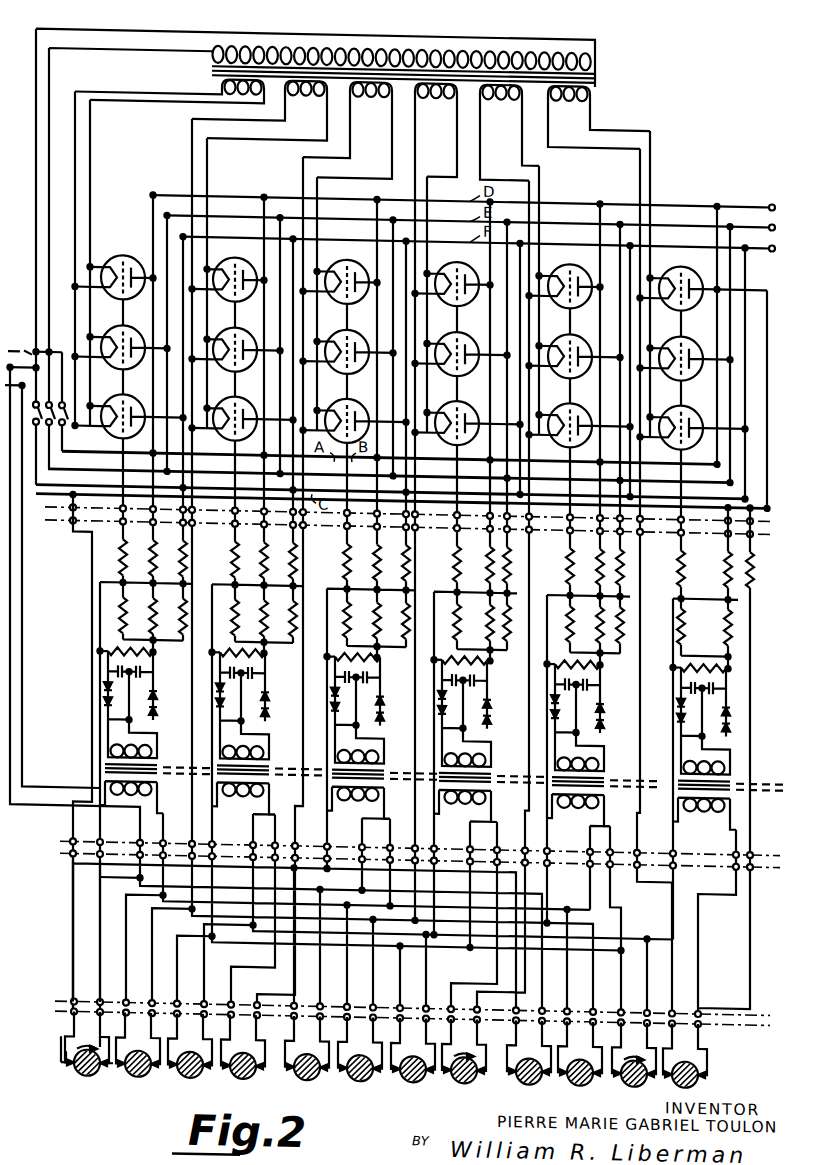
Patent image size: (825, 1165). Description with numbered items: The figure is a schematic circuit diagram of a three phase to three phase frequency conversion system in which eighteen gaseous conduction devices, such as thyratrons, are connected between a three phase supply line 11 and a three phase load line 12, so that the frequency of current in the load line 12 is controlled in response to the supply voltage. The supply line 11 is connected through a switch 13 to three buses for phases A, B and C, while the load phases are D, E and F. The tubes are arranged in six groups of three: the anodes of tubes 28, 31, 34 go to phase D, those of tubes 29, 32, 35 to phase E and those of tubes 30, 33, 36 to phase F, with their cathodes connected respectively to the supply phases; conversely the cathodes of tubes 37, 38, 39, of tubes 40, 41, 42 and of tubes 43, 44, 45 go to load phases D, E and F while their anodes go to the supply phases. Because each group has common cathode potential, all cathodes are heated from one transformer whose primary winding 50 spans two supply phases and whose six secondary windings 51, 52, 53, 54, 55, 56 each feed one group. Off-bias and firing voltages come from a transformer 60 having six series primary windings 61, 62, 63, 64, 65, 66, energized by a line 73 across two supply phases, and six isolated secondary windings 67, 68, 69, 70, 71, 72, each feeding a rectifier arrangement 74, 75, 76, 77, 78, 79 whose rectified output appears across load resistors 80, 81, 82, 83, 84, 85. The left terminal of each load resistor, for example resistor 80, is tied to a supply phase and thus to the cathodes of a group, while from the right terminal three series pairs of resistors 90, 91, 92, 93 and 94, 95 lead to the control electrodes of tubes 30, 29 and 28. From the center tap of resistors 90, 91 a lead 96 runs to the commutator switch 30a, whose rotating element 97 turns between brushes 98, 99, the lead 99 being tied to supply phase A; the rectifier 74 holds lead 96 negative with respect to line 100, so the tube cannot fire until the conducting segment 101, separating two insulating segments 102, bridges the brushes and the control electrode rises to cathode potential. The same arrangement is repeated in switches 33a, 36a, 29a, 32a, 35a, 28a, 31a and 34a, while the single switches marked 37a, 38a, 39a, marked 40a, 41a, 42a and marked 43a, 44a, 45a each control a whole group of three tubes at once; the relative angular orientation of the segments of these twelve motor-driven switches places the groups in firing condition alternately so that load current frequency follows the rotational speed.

The three phase supply line 11 is at (30, 350).
The three phase load line 12 is at (780, 185).
The switch 13 is at (52, 430).
The gaseous conduction device 28 is at (123, 253).
The gaseous conduction device 29 is at (118, 323).
The gaseous conduction device 30 is at (118, 392).
The gaseous conduction device 31 is at (233, 253).
The gaseous conduction device 32 is at (236, 323).
The gaseous conduction device 33 is at (236, 392).
The gaseous conduction device 34 is at (345, 253).
The gaseous conduction device 35 is at (347, 323).
The gaseous conduction device 36 is at (347, 392).
The gaseous conduction device 37 is at (450, 392).
The gaseous conduction device 38 is at (465, 333).
The gaseous conduction device 39 is at (462, 258).
The gaseous conduction device 40 is at (562, 392).
The gaseous conduction device 41 is at (578, 333).
The gaseous conduction device 42 is at (576, 260).
The gaseous conduction device 43 is at (672, 392).
The gaseous conduction device 44 is at (692, 335).
The gaseous conduction device 45 is at (698, 260).
The primary winding 50 is at (432, 48).
The secondary winding 51 is at (225, 93).
The secondary winding 52 is at (289, 96).
The secondary winding 53 is at (355, 96).
The secondary winding 54 is at (428, 96).
The secondary winding 55 is at (490, 96).
The secondary winding 56 is at (560, 96).
The transformer 60 is at (80, 776).
The primary winding 61 is at (132, 805).
The primary winding 62 is at (243, 805).
The primary winding 63 is at (358, 808).
The primary winding 64 is at (458, 809).
The primary winding 65 is at (568, 811).
The primary winding 66 is at (690, 812).
The secondary winding 67 is at (143, 750).
The secondary winding 68 is at (255, 750).
The secondary winding 69 is at (370, 752).
The secondary winding 70 is at (478, 754).
The secondary winding 71 is at (593, 756).
The secondary winding 72 is at (690, 756).
The line 73 is at (10, 600).
The rectifier arrangement 74 is at (108, 712).
The rectifier arrangement 75 is at (266, 696).
The rectifier arrangement 76 is at (381, 698).
The rectifier arrangement 77 is at (488, 698).
The rectifier arrangement 78 is at (556, 714).
The rectifier arrangement 79 is at (682, 722).
The load resistor 80 is at (126, 648).
The load resistor 81 is at (238, 647).
The load resistor 82 is at (353, 649).
The load resistor 83 is at (452, 650).
The load resistor 84 is at (576, 652).
The load resistor 85 is at (702, 653).
The resistor 90 is at (123, 598).
The resistor 91 is at (119, 549).
The resistor 92 is at (152, 610).
The resistor 93 is at (182, 560).
The resistor 94 is at (182, 632).
The resistor 95 is at (157, 552).
The lead 96 is at (100, 925).
The rotating element 97 is at (78, 1075).
The brush 98 is at (110, 1068).
The lead 99 is at (64, 1068).
The line 100 is at (73, 968).
The conducting segment 101 is at (70, 1078).
The insulating segments 102 is at (60, 1052).
The commutator switch 28a is at (529, 1065).
The commutator switch 29a is at (307, 1059).
The commutator switch 30a is at (87, 1053).
The commutator switch 31a is at (580, 1065).
The commutator switch 32a is at (360, 1061).
The commutator switch 33a is at (138, 1054).
The commutator switch 34a is at (634, 1067).
The commutator switch 35a is at (413, 1062).
The commutator switch 36a is at (190, 1056).
The commutator switch 37a is at (248, 1067).
The commutator switch 38a is at (248, 1067).
The commutator switch 39a is at (248, 1067).
The commutator switch 40a is at (464, 1078).
The commutator switch 41a is at (464, 1078).
The commutator switch 42a is at (464, 1078).
The commutator switch 43a is at (702, 1063).
The commutator switch 44a is at (702, 1063).
The commutator switch 45a is at (702, 1063).